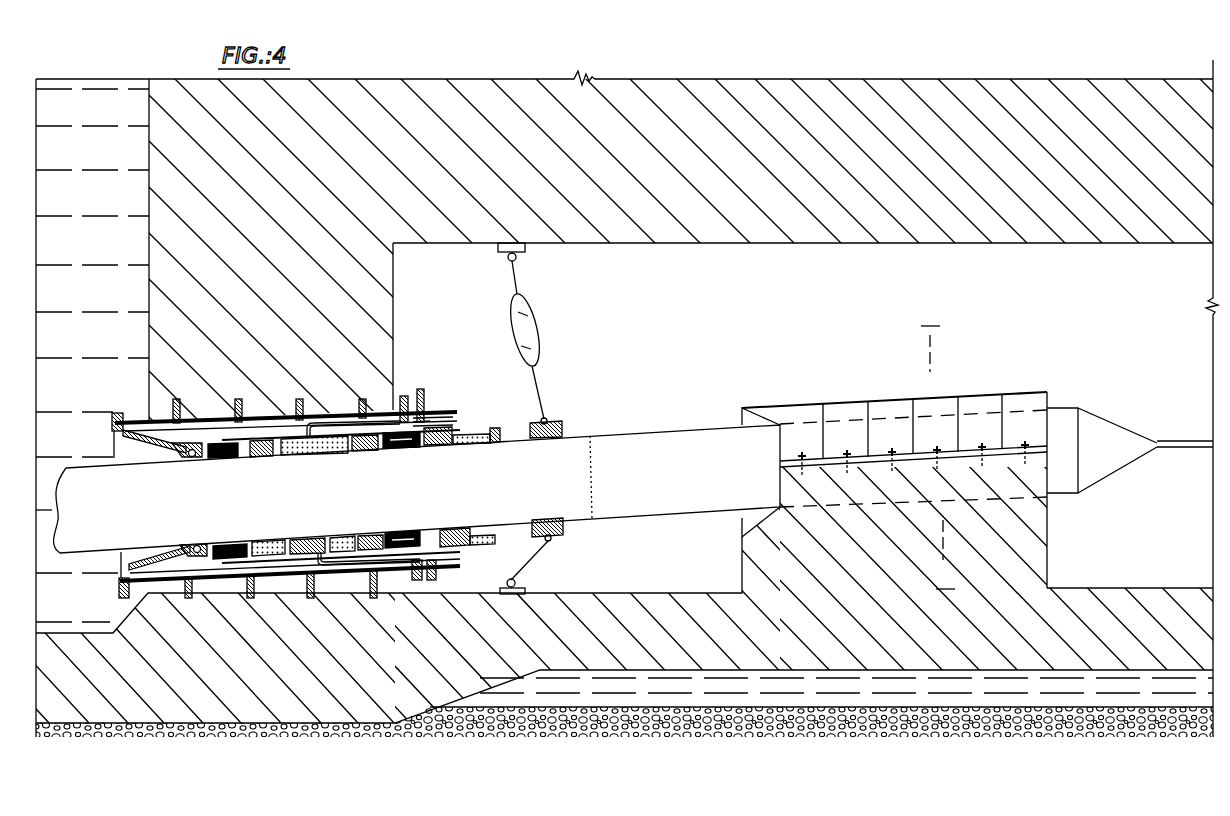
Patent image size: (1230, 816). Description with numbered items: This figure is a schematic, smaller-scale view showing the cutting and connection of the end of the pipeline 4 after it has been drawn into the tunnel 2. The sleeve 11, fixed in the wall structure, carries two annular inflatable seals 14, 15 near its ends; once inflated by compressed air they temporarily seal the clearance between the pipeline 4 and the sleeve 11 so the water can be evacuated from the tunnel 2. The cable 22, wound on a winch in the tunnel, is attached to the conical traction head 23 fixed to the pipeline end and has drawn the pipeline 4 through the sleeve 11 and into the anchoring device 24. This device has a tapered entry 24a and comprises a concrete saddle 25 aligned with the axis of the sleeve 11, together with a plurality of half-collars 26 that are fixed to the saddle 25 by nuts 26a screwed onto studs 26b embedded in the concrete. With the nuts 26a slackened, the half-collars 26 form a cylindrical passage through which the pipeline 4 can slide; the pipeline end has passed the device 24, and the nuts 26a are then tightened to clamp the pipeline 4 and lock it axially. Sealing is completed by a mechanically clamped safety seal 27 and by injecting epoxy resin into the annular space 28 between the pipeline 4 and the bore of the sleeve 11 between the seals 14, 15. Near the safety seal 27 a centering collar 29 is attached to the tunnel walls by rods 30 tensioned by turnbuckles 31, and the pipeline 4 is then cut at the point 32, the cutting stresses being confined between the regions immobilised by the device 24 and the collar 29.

The tunnel 2 is at (1142, 320).
The pipeline 4 is at (666, 432).
The sleeve 11 is at (342, 540).
The annular inflatable seal 14 is at (226, 458).
The annular inflatable seal 15 is at (393, 450).
The cable 22 is at (1172, 440).
The conical traction head 23 is at (1108, 418).
The anchoring device 24 is at (978, 392).
The tapered entry 24a is at (753, 524).
The concrete saddle 25 is at (1013, 573).
The half-collars 26 is at (890, 410).
The nuts 26a is at (820, 460).
The studs 26b is at (836, 470).
The safety seal 27 is at (465, 425).
The annular space 28 is at (322, 428).
The centering collar 29 is at (567, 530).
The rods 30 is at (540, 393).
The turnbuckles 31 is at (540, 322).
The cutting point 32 is at (598, 432).